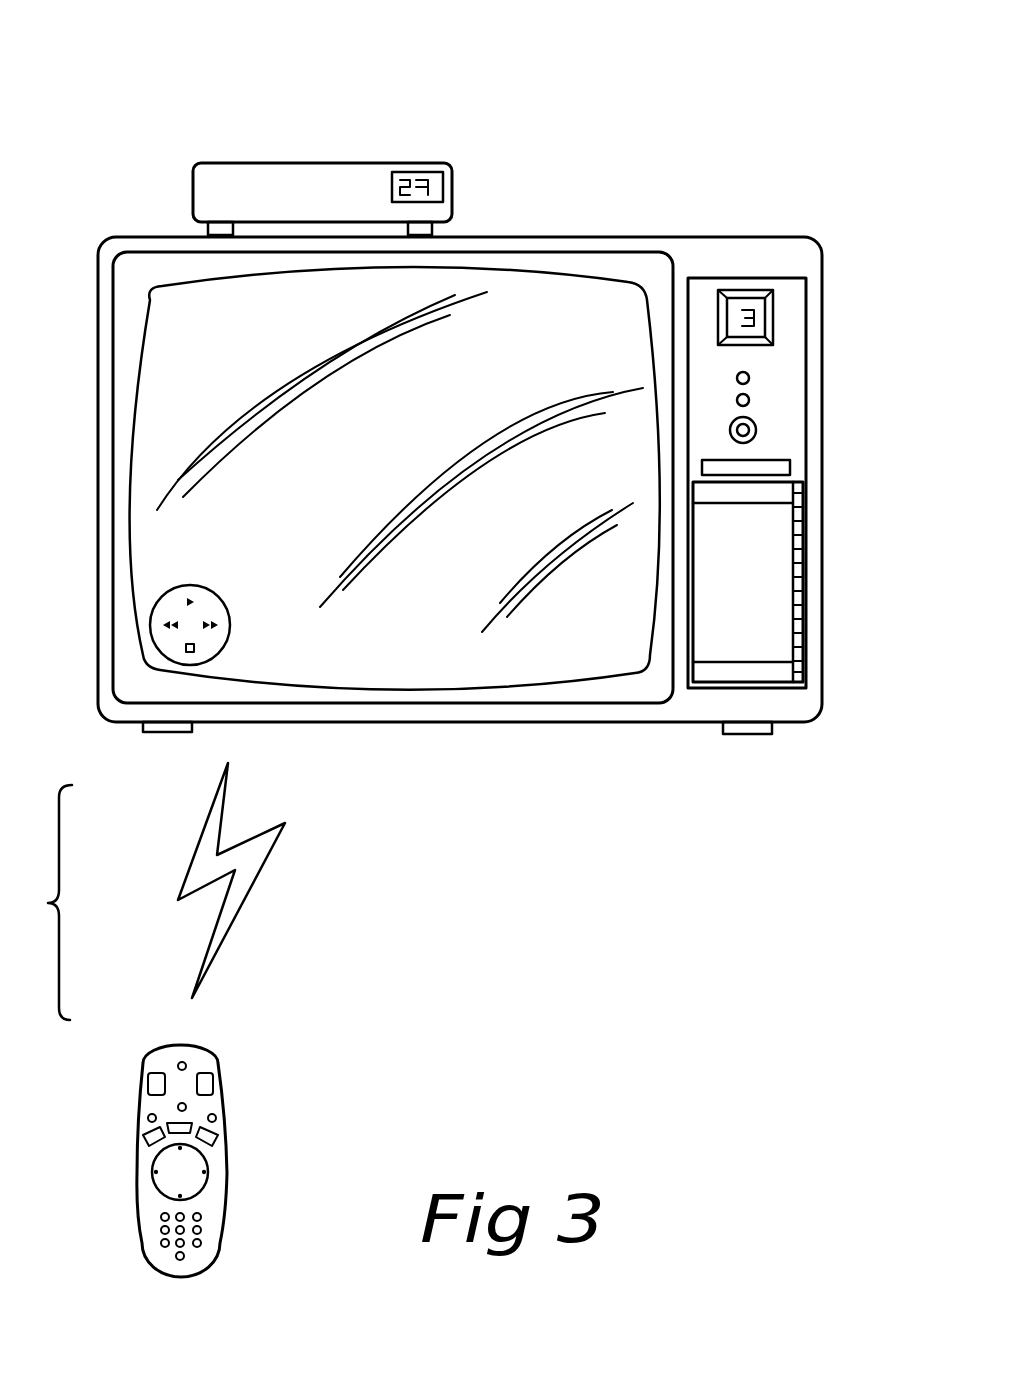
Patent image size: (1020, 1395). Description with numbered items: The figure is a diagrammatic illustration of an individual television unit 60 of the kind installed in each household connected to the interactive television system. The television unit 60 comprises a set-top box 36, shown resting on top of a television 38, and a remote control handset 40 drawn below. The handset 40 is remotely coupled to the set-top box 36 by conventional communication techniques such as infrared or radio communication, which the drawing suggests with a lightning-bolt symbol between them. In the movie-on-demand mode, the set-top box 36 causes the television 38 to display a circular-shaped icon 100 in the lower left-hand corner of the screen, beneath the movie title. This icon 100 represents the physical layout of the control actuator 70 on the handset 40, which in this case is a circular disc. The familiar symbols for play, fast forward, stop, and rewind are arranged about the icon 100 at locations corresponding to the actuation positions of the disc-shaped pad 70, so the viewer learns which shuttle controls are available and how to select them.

The television unit 60 is at (775, 153).
The set-top box 36 is at (452, 198).
The television 38 is at (822, 372).
The circular-shaped icon 100 is at (205, 608).
The remote control handset 40 is at (225, 1125).
The control actuator 70 is at (173, 1178).